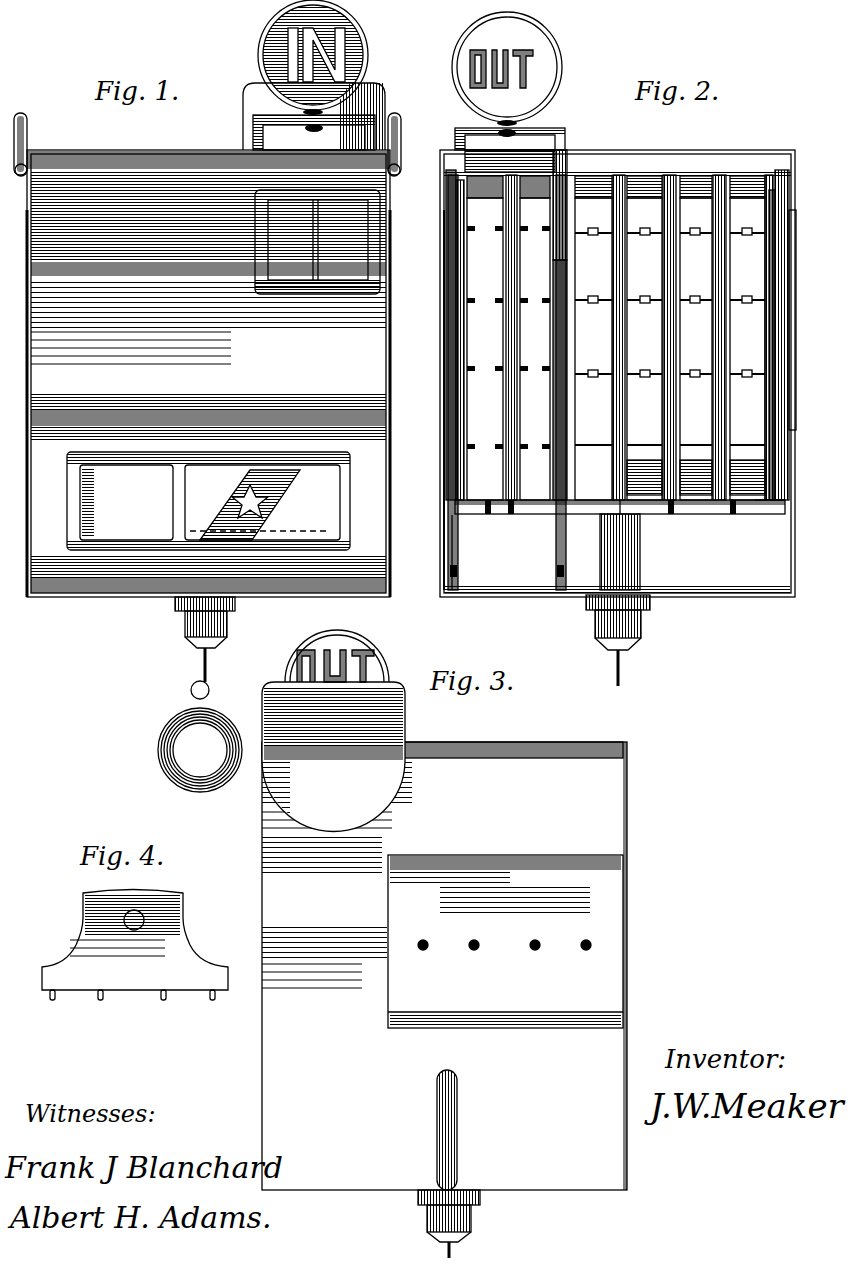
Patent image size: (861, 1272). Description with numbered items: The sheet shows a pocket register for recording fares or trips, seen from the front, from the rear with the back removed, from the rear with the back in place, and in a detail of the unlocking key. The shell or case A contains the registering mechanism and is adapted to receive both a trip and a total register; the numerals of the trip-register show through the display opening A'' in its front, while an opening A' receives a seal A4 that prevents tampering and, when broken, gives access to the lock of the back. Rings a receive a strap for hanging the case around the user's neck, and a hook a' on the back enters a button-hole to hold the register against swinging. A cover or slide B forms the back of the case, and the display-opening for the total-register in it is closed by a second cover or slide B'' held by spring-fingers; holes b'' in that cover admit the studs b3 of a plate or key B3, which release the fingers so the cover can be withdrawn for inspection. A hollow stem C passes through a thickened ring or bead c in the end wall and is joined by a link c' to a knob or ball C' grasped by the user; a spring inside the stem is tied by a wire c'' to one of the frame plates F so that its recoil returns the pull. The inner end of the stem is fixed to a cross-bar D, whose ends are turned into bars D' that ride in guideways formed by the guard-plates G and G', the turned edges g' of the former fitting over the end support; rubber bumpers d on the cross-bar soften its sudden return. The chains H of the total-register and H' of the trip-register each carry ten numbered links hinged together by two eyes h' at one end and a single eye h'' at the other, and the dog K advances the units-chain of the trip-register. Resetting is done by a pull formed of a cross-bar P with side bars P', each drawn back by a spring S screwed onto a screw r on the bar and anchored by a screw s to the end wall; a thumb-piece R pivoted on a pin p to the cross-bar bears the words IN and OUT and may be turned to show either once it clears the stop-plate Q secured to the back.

In FIG. 1, the shell or case A is at (208, 373).
In FIG. 2, the shell or case A is at (618, 363).
In FIG. 1, the opening for seal A' is at (208, 489).
In FIG. 2, the opening for seal A' is at (591, 569).
In FIG. 1, the display opening A'' is at (303, 241).
In FIG. 1, the seal A4 is at (260, 505).
In FIG. 1, the rings a is at (216, 144).
In FIG. 2, the rings a is at (424, 139).
In FIG. 3, the hook a' is at (460, 1130).
In FIG. 3, the cover or slide B is at (444, 966).
In FIG. 3, the cover or slide for total-register opening B'' is at (505, 941).
In FIG. 3, the holes b'' is at (497, 936).
In FIG. 4, the plate or key B3 is at (135, 940).
In FIG. 4, the studs b3 is at (56, 1000).
In FIG. 1, the hollow stem C is at (187, 629).
In FIG. 2, the hollow stem C is at (631, 582).
In FIG. 3, the hollow stem C is at (462, 1223).
In FIG. 1, the ring or bead c is at (216, 614).
In FIG. 2, the ring or bead c is at (606, 609).
In FIG. 3, the ring or bead c is at (436, 1208).
In FIG. 1, the link c' is at (210, 673).
In FIG. 2, the link c' is at (631, 668).
In FIG. 3, the link c' is at (464, 1247).
In FIG. 2, the wire c'' is at (647, 516).
In FIG. 1, the knob or ball C' is at (200, 750).
In FIG. 2, the cross-bar D is at (620, 497).
In FIG. 2, the bars D' is at (787, 481).
In FIG. 2, the bumpers d is at (500, 504).
In FIG. 2, the plates (end guide or support) F is at (514, 166).
In FIG. 2, the guard-plate G is at (793, 335).
In FIG. 2, the guard-plate G' is at (438, 335).
In FIG. 2, the turned edges g' is at (620, 320).
In FIG. 2, the chains for total-register H is at (670, 350).
In FIG. 2, the chains for trip-register H' is at (477, 343).
In FIG. 2, the eyes h' is at (583, 323).
In FIG. 2, the single eye h'' is at (670, 336).
In FIG. 2, the dog for units-chain of trip-register K is at (760, 168).
In FIG. 1, the cross-bar of resetting pull P is at (334, 139).
In FIG. 2, the cross-bar of resetting pull P is at (512, 136).
In FIG. 1, the side bars P' is at (314, 132).
In FIG. 2, the side bars P' is at (513, 137).
In FIG. 1, the pin or pivot p is at (318, 126).
In FIG. 2, the pin or pivot p is at (498, 134).
In FIG. 1, the stop-plate Q is at (243, 103).
In FIG. 3, the stop-plate Q is at (333, 757).
In FIG. 1, the thumb-piece R is at (366, 52).
In FIG. 2, the thumb-piece R is at (558, 58).
In FIG. 3, the thumb-piece R is at (383, 645).
In FIG. 2, the screw r is at (440, 268).
In FIG. 2, the springs S is at (446, 382).
In FIG. 2, the screw rod S' is at (548, 382).
In FIG. 2, the screw s is at (458, 578).